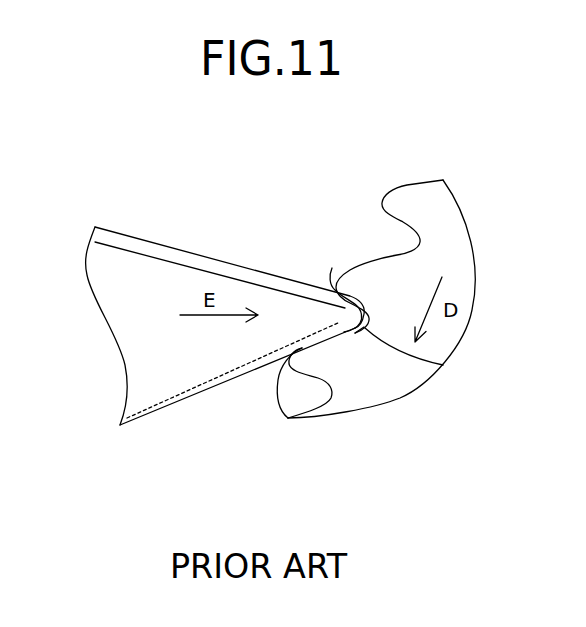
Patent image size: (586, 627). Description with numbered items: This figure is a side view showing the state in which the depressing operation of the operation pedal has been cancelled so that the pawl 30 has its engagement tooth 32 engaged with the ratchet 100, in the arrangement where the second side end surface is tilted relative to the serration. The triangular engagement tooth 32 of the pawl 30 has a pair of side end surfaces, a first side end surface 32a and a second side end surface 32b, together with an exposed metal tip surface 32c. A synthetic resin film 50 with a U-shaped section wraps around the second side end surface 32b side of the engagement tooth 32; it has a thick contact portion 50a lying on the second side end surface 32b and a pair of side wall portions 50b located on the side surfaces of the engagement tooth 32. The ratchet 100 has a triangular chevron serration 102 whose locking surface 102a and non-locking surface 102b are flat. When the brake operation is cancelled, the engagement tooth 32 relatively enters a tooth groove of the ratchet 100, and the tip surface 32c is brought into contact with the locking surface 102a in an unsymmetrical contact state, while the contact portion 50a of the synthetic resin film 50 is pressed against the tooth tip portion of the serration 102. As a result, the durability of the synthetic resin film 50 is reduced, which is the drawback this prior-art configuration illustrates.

The pawl 30 is at (111, 192).
The engagement tooth 32 is at (136, 433).
The first side end surface 32a is at (250, 268).
The second side end surface 32b is at (172, 397).
The tip surface 32c is at (443, 365).
The synthetic resin film 50 is at (165, 250).
The contact portion 50a is at (217, 375).
The side wall portions 50b is at (137, 330).
The ratchet 100 is at (450, 247).
The serration 102 is at (352, 285).
The locking surface 102a is at (325, 290).
The non-locking surface 102b is at (355, 334).